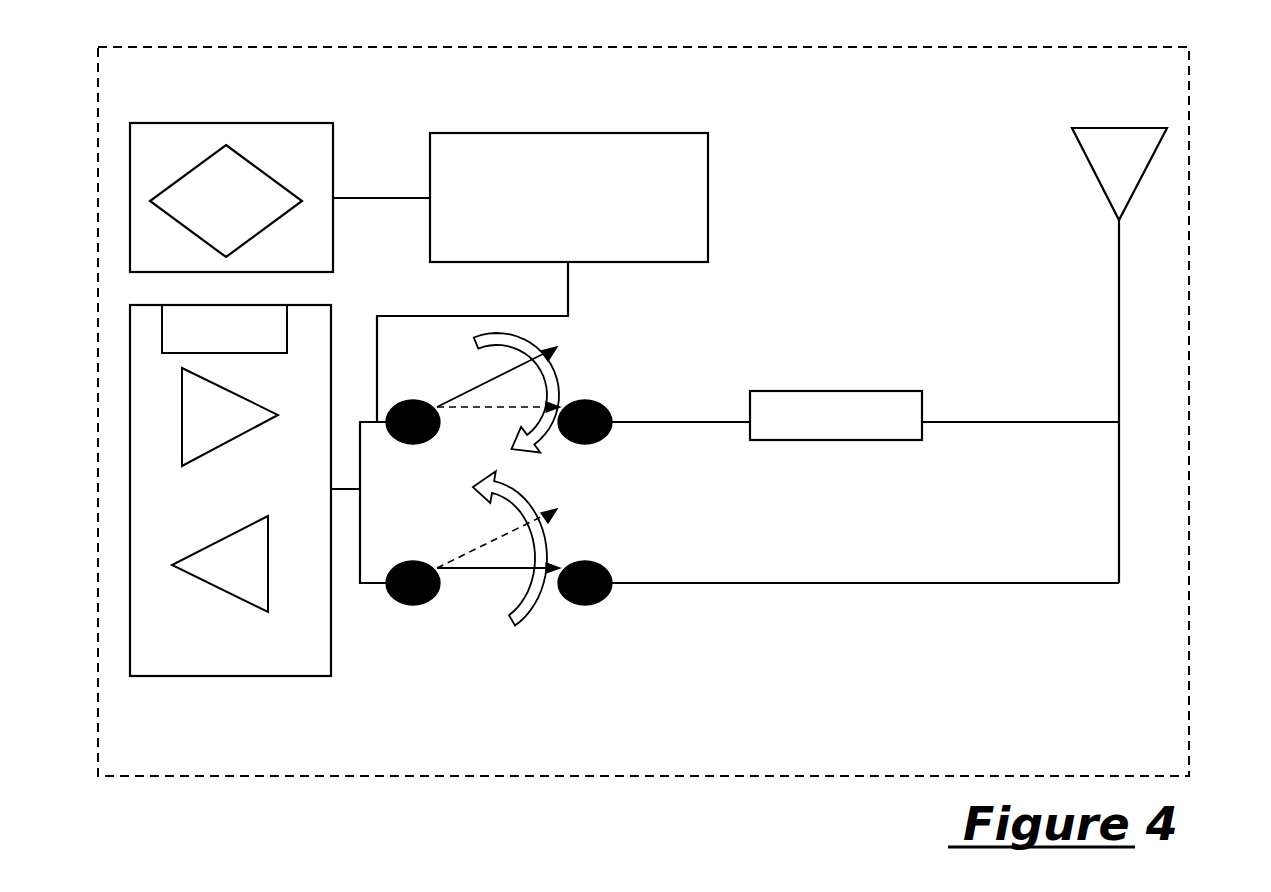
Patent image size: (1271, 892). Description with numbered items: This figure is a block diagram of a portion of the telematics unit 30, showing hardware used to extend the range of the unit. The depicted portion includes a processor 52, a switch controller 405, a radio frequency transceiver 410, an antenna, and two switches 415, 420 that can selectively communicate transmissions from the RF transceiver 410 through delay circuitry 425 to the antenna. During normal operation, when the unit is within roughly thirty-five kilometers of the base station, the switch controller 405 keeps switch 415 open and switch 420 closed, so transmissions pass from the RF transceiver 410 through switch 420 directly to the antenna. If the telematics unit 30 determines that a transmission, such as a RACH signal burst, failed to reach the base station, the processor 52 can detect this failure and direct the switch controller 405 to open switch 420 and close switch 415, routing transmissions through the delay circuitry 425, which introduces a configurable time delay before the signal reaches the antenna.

The telematics unit 30 is at (1189, 413).
The processor 52 is at (263, 122).
The switch controller 405 is at (708, 182).
The radio frequency (RF) transceiver 410 is at (268, 677).
The switch 415 is at (453, 400).
The switch 420 is at (457, 568).
The delay circuitry 425 is at (863, 390).